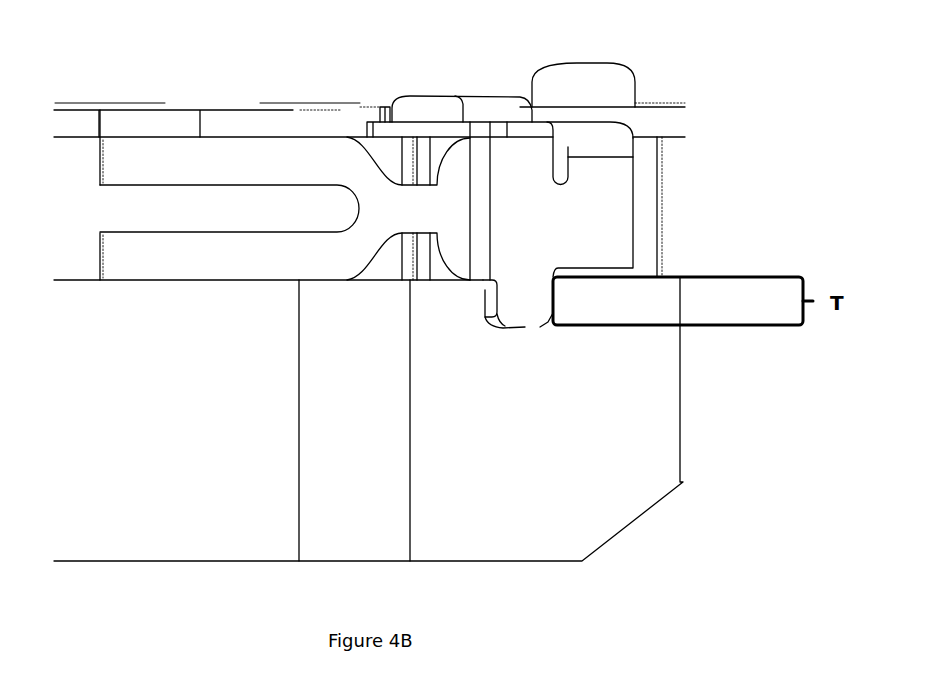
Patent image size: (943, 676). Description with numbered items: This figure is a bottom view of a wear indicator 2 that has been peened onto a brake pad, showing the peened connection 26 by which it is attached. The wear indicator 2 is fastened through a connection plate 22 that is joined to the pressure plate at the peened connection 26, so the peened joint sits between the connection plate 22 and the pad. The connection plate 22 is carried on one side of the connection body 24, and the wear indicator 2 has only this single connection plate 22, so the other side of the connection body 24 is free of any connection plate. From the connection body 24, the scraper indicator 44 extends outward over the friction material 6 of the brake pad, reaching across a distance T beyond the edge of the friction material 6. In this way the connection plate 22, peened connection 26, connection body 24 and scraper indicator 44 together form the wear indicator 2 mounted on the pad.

The connection plate 22 is at (383, 128).
The peened connection 26 is at (450, 110).
The wear indicator 2 is at (658, 165).
The connection body 24 is at (603, 218).
The scraper indicator 44 is at (525, 323).
The friction material 6 is at (603, 448).